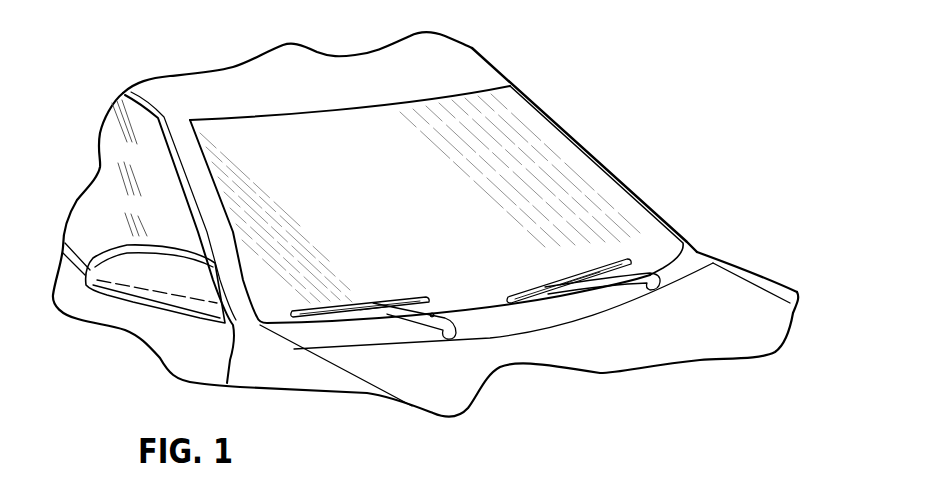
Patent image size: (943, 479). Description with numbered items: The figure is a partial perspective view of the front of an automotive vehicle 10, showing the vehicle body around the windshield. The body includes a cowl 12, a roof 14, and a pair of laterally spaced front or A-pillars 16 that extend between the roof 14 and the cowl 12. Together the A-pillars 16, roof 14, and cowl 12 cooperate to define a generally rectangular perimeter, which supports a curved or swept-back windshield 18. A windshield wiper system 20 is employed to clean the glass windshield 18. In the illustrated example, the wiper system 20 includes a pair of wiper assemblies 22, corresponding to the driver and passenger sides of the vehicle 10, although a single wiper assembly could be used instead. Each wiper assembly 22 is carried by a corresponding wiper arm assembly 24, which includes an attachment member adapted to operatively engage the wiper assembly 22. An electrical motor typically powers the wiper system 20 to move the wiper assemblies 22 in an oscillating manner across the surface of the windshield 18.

The vehicle 10 is at (88, 115).
The cowl 12 is at (686, 270).
The roof 14 is at (458, 67).
The A-pillars 16 is at (203, 195).
The windshield 18 is at (538, 138).
The windshield wiper system 20 is at (558, 347).
The wiper assemblies 22 is at (407, 291).
The wiper arm assembly 24 is at (432, 330).